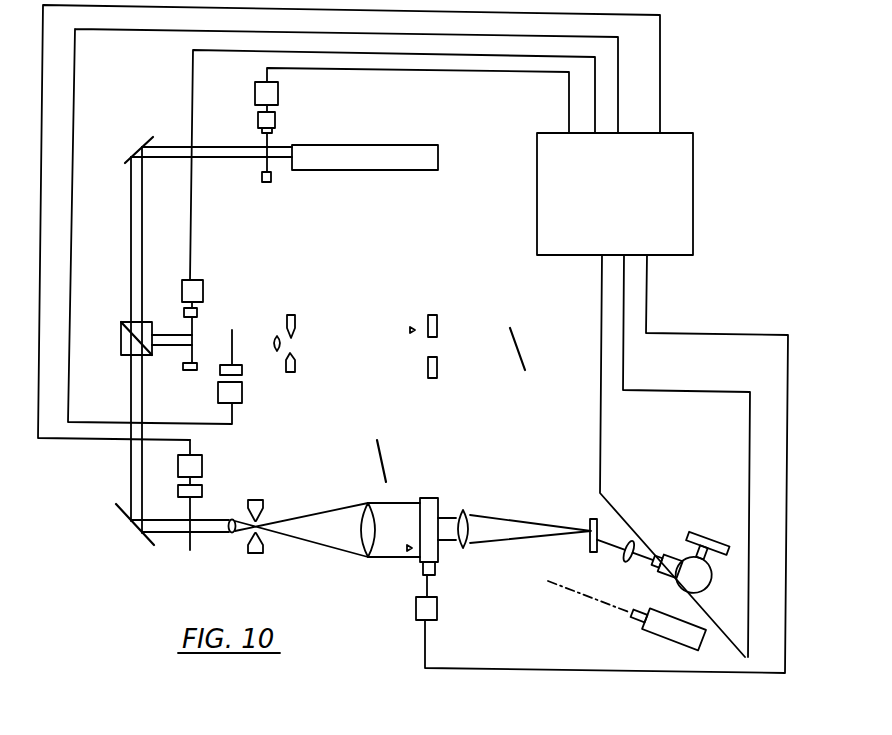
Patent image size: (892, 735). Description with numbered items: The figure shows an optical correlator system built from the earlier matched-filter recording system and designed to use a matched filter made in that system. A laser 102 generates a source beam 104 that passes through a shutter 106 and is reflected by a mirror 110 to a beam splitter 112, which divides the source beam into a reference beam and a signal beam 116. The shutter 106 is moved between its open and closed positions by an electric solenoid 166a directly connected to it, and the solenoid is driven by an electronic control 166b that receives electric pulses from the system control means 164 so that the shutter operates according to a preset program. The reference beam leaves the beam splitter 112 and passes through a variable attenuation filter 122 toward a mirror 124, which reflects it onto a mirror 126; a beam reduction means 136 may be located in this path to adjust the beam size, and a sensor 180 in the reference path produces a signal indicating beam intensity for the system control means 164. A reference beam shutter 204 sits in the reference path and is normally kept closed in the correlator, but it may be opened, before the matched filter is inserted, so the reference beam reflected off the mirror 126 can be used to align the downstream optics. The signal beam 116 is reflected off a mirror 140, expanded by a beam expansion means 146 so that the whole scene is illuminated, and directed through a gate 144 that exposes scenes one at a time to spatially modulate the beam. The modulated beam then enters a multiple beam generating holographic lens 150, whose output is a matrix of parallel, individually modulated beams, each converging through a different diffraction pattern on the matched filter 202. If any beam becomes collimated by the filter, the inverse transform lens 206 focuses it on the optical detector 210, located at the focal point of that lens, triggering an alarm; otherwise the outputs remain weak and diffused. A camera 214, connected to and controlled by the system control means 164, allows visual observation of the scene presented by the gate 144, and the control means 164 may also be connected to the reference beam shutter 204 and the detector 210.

The laser 102 is at (415, 145).
The source beam 104 is at (131, 248).
The shutter 106 is at (259, 168).
The mirror 110 is at (126, 150).
The beam splitter 112 is at (120, 342).
The signal beam 116 is at (130, 472).
The variable attenuation filter 122 is at (235, 358).
The mirror 124 is at (517, 342).
The mirror 126 is at (380, 464).
The beam reduction means 136 is at (427, 367).
The mirror 140 is at (138, 538).
The gate 144 is at (435, 498).
The beam expansion means 146 is at (273, 545).
The multiple beam generating holographic lens 150 is at (460, 548).
The system control means 164 is at (615, 194).
The electric solenoid 166a is at (275, 122).
The electronic control 166b is at (277, 93).
The sensor 180 is at (416, 318).
The matched filter 202 is at (593, 519).
The reference beam shutter 204 is at (192, 337).
The inverse transform lens 206 is at (618, 569).
The optical detector 210 is at (692, 580).
The camera 214 is at (660, 637).